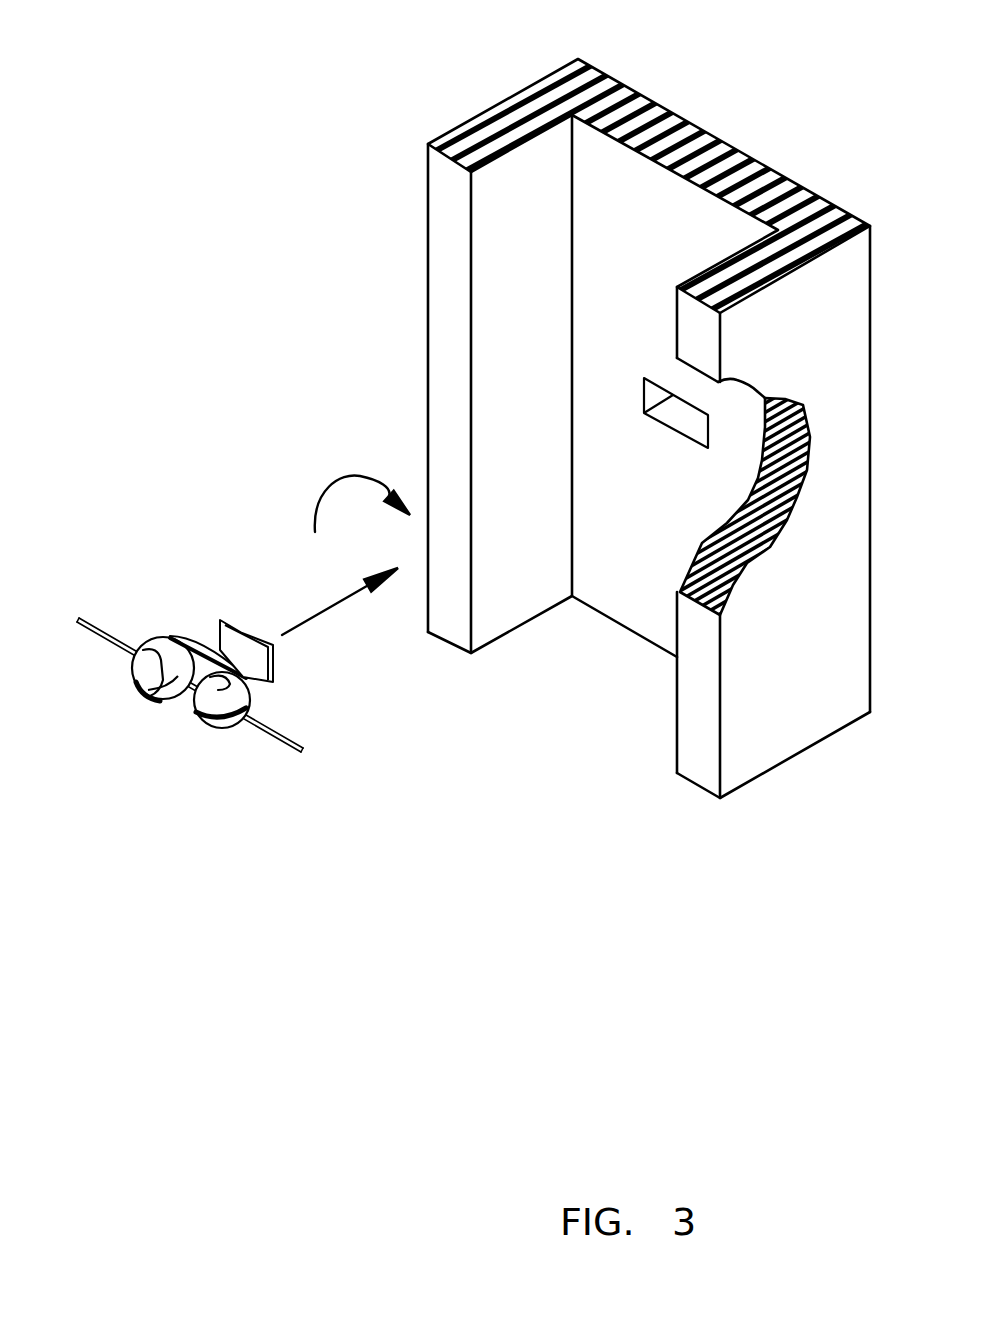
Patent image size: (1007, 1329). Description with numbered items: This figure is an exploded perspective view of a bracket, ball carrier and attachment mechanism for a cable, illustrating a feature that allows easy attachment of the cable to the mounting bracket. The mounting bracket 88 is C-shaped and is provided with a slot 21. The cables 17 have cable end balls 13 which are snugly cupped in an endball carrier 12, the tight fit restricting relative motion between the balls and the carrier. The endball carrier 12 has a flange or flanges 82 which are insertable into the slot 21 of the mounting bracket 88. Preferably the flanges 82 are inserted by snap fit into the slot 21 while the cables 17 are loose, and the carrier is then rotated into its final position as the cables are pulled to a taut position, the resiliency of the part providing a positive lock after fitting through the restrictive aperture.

The mounting bracket 88 is at (510, 115).
The slot 21 is at (675, 417).
The endball carrier 12 is at (142, 653).
The cable end ball 13 is at (172, 688).
The cable 17 is at (280, 737).
The flange 82 is at (220, 635).